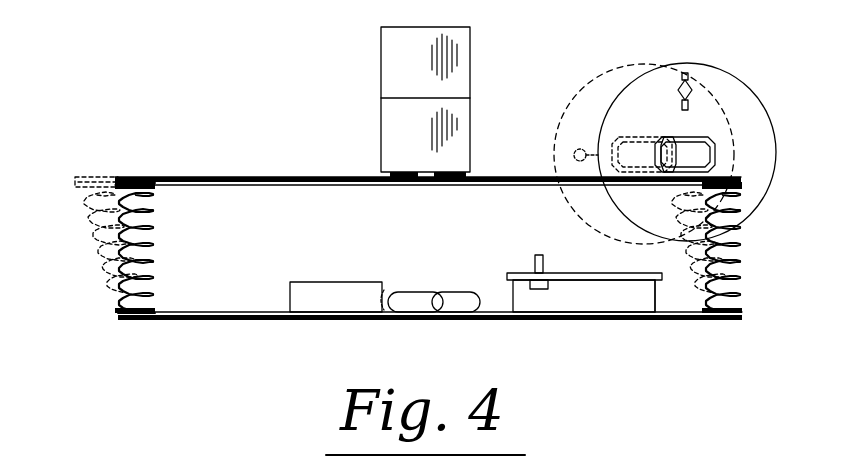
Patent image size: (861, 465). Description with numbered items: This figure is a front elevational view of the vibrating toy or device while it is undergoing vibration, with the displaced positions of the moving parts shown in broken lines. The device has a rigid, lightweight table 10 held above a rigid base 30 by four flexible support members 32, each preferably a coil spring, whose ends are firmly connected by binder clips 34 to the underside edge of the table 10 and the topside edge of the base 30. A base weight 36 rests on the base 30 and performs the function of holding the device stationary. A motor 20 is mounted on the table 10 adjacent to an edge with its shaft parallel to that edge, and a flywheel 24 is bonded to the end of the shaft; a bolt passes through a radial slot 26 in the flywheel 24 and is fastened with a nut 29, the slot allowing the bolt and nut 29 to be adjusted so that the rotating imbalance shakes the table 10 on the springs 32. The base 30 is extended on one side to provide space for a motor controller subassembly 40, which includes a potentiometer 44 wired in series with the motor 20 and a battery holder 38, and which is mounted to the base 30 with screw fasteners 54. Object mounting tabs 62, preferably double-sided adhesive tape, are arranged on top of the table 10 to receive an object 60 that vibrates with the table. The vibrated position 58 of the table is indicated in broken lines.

The table 10 is at (280, 178).
The motor 20 is at (685, 137).
The flywheel 24 is at (715, 63).
The radial slot 26 is at (692, 106).
The nut 29 is at (697, 90).
The base 30 is at (245, 320).
The flexible support members 32 is at (744, 282).
The binder clip 34 is at (130, 178).
The base weight 36 is at (433, 292).
The battery holder 38 is at (335, 282).
The motor controller subassembly 40 is at (592, 282).
The potentiometer 44 is at (542, 287).
The screw fasteners 54 is at (657, 294).
The displaced plate position 58 is at (182, 178).
The object 60 is at (382, 82).
The object mounting tabs 62 is at (400, 172).